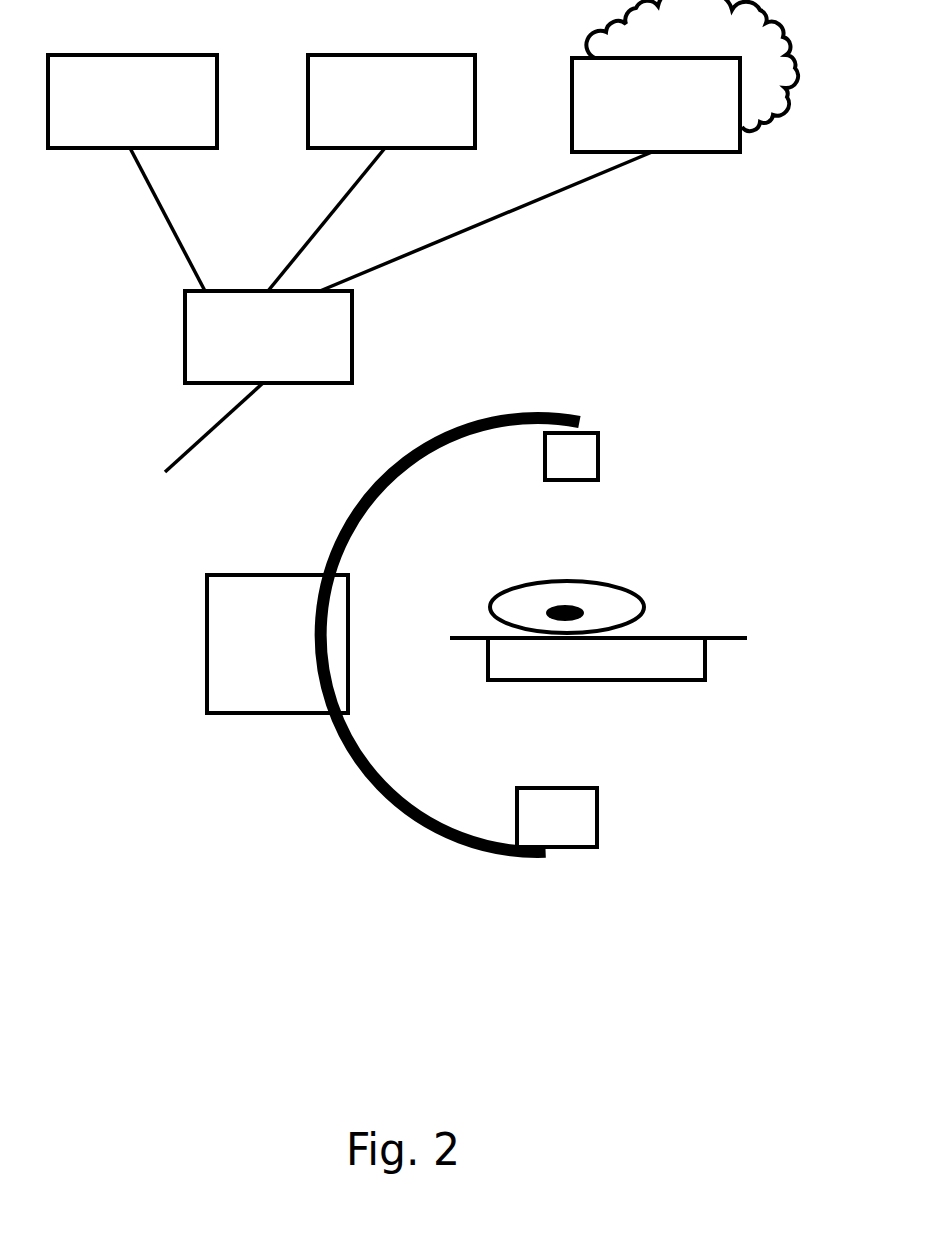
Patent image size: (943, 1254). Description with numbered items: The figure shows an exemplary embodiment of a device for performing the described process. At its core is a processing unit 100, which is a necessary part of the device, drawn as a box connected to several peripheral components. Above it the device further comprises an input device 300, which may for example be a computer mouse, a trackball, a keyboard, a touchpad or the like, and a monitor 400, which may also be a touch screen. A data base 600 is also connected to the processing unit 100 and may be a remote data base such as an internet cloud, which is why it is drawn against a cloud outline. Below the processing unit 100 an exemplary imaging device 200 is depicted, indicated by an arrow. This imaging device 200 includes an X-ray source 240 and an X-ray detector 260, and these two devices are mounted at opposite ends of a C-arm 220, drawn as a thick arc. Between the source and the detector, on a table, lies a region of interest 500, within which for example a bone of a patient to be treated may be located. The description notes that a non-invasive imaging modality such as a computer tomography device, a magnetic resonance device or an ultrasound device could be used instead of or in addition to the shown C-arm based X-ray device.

The processing unit 100 is at (258, 381).
The imaging device 200 is at (262, 531).
The C-arm 220 is at (399, 771).
The X-ray source 240 is at (597, 818).
The X-ray detector 260 is at (598, 457).
The input device 300 is at (132, 173).
The monitor 400 is at (371, 173).
The region of interest 500 is at (575, 607).
The data base 600 is at (559, 145).